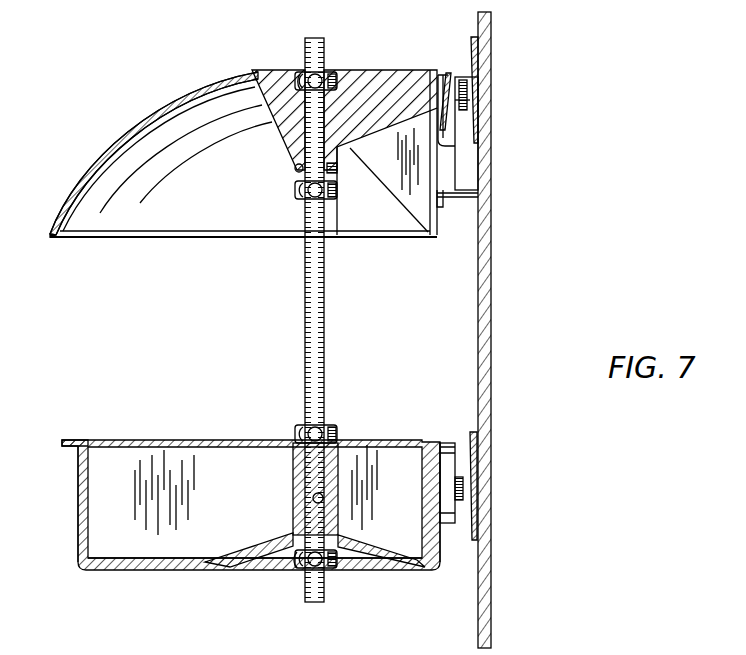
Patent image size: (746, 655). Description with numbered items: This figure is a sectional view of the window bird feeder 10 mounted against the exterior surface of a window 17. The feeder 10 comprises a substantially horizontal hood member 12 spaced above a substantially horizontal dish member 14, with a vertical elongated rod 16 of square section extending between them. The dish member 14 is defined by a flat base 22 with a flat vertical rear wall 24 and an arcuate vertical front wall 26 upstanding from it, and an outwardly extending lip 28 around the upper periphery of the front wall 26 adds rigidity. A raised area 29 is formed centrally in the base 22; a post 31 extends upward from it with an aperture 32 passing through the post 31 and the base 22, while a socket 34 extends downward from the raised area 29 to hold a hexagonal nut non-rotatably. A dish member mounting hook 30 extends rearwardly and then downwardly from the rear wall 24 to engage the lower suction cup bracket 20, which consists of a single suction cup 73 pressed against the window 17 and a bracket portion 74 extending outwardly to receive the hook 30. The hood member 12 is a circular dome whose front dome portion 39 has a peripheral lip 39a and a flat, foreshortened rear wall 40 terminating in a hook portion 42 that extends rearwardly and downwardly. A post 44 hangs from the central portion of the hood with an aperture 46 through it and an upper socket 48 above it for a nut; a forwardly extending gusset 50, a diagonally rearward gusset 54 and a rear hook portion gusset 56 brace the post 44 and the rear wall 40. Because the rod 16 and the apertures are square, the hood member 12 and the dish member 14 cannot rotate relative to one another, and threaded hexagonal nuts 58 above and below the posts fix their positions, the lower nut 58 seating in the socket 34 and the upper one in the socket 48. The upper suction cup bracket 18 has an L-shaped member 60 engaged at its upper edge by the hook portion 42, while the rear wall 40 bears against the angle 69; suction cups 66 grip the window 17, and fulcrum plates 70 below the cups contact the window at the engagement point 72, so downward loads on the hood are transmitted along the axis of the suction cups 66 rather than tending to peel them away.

The window bird feeder 10 is at (424, 341).
The hood member 12 is at (228, 147).
The dish member 14 is at (232, 494).
The elongated rod 16 is at (305, 322).
The window 17 is at (491, 310).
The upper suction cup bracket 18 is at (508, 134).
The lower suction cup bracket 20 is at (490, 519).
The base 22 is at (172, 570).
The rear wall 24 is at (423, 473).
The front wall 26 is at (78, 497).
The lip 28 is at (68, 440).
The raised area 29 is at (366, 560).
The dish member mounting hook 30 is at (293, 487).
The post 31 is at (443, 445).
The aperture 32 is at (322, 498).
The socket 34 is at (300, 570).
The front dome portion 39 is at (210, 92).
The peripheral lip 39a is at (50, 234).
The rear wall 40 is at (440, 232).
The hook portion 42 is at (445, 75).
The post 44 is at (294, 168).
The aperture 46 is at (332, 172).
The upper socket 48 is at (300, 73).
The forwardly extending gusset 50 is at (258, 118).
The diagonally rearwardly extending gusset 54 is at (392, 195).
The rear hook portion gusset 56 is at (405, 70).
The threaded hexagonal nut 58 is at (330, 72).
The L-shaped member 60 is at (462, 100).
The suction cup 66 is at (472, 72).
The angle 69 is at (437, 128).
The fulcrum plate 70 is at (462, 200).
The engagement point 72 is at (478, 191).
The suction cup 73 is at (472, 510).
The bracket portion 74 is at (447, 483).